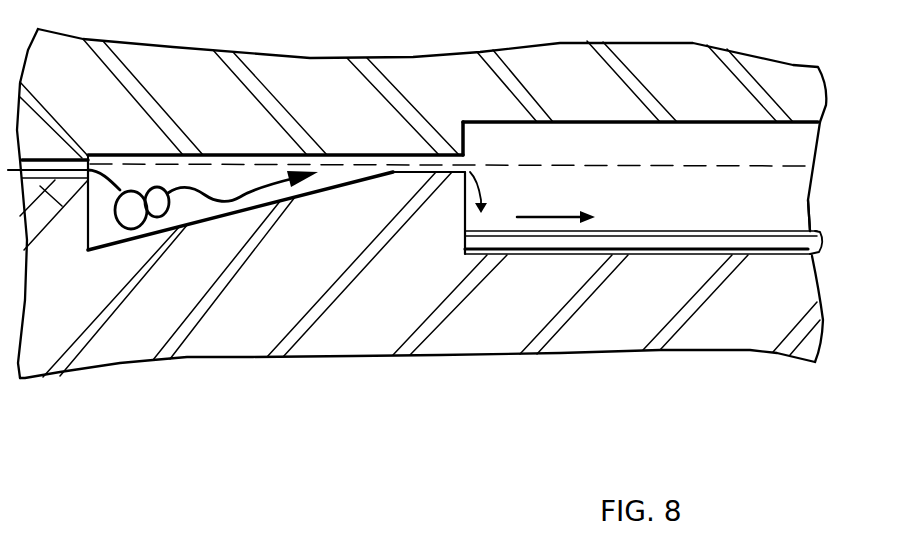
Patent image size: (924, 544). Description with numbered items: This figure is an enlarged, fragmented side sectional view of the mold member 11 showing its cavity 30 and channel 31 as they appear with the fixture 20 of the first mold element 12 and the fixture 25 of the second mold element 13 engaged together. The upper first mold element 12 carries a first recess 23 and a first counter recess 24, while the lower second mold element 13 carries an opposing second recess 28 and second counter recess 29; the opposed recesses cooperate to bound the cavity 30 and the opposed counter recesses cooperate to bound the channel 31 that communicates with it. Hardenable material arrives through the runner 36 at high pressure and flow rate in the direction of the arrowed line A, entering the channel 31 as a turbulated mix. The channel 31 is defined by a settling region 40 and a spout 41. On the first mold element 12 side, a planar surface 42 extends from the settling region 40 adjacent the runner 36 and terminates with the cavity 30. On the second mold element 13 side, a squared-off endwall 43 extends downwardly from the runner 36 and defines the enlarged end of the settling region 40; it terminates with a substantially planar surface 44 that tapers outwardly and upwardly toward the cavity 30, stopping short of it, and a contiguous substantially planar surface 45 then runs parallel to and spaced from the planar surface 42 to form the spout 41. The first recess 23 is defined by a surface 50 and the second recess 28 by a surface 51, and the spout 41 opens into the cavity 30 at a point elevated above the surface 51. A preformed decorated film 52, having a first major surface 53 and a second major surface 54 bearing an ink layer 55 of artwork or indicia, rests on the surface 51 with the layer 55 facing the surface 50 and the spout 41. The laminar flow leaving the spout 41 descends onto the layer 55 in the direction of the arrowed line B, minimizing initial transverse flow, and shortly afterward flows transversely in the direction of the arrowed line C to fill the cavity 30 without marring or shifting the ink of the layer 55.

The mold member 11 is at (555, 42).
The first mold element 12 is at (697, 43).
The second mold element 13 is at (752, 354).
The fixture 20 is at (415, 75).
The first recess 23 is at (728, 130).
The first counter recess 24 is at (338, 180).
The fixture 25 is at (483, 330).
The second recess 28 is at (627, 246).
The second counter recess 29 is at (180, 220).
The cavity 30 is at (708, 185).
The channel 31 is at (202, 172).
The runner 36 is at (49, 160).
The settling region 40 is at (107, 200).
The spout 41 is at (393, 175).
The planar surface 42 is at (123, 157).
The endwall 43 is at (88, 235).
The substantially planar surface 44 is at (266, 202).
The substantially planar surface 45 is at (465, 168).
The surface 50 is at (635, 124).
The surface 51 is at (551, 252).
The film 52 is at (790, 244).
The first major surface 53 is at (777, 233).
The second major surface 54 is at (738, 255).
The layer 55 is at (702, 231).
The arrowed line A is at (233, 200).
The arrowed line B is at (485, 195).
The arrowed line C is at (553, 212).